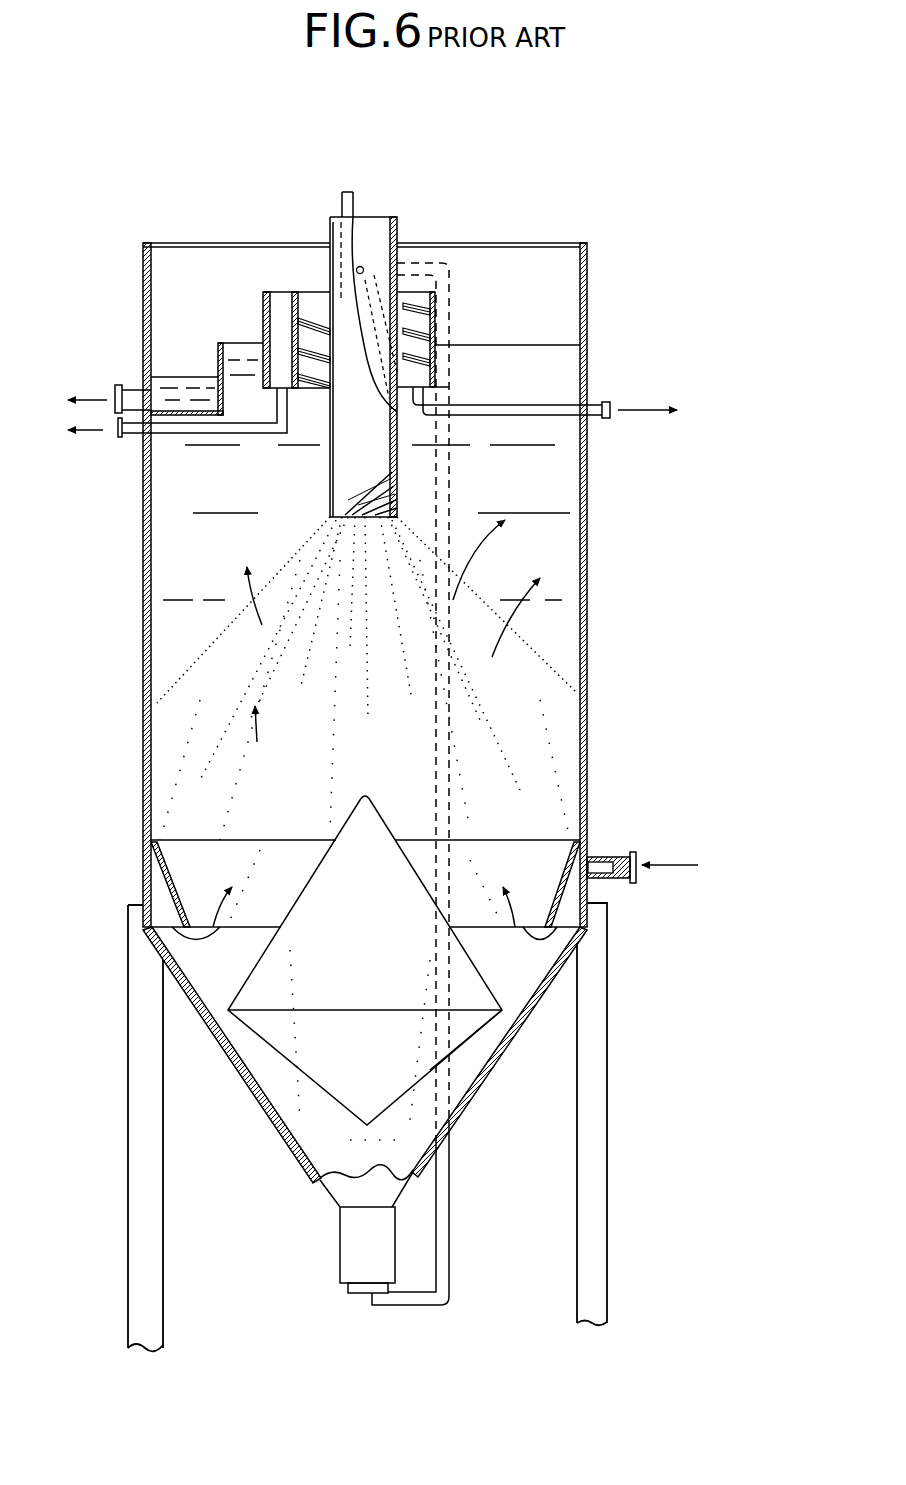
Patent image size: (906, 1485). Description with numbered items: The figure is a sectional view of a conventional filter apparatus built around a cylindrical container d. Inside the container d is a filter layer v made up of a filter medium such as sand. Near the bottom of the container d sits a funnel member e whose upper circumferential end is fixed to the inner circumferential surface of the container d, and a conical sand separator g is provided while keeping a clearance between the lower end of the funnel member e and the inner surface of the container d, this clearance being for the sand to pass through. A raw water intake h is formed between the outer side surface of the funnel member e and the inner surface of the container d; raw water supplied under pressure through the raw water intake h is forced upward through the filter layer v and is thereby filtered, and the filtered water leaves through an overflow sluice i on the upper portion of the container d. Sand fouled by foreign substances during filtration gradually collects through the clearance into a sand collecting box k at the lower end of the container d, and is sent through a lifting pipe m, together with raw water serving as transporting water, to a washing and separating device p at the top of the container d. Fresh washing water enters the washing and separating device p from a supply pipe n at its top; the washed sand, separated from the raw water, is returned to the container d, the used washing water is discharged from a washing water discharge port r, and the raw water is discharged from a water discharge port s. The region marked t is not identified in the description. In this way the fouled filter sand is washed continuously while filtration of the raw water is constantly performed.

The supply pipe n is at (330, 232).
The overflow sluice i is at (218, 352).
The washing water discharge port r is at (125, 437).
The washing and separating device p is at (332, 470).
The water discharge port s is at (598, 418).
The cylindrical container d is at (587, 576).
The filter layer v is at (373, 753).
The funnel member e is at (560, 862).
The raw water intake h is at (567, 903).
The conical sand separator g is at (376, 970).
The particle layer region t is at (505, 1013).
The sand collecting box k is at (352, 1257).
The lifting pipe m is at (455, 1247).